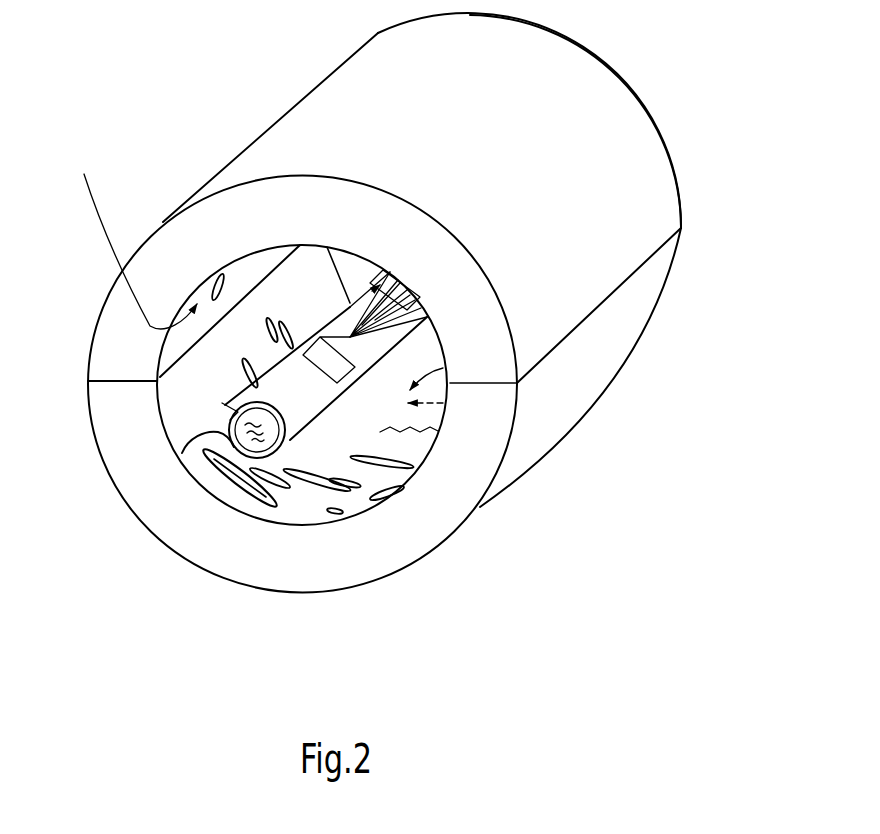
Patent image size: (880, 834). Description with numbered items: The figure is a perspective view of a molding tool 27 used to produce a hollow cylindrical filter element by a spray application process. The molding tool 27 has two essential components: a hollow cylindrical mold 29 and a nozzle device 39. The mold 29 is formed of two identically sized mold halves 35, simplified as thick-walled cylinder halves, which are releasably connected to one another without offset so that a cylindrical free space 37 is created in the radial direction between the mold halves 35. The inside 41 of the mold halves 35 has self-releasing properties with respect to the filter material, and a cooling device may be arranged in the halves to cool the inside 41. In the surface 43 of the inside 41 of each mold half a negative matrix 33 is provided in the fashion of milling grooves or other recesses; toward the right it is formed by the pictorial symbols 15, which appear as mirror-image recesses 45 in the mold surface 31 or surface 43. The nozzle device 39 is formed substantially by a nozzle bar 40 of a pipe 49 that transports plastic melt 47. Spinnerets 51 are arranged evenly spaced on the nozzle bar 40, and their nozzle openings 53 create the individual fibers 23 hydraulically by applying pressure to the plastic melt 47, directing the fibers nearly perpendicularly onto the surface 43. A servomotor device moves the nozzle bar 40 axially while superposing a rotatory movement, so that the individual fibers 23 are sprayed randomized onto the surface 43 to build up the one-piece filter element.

The pictorial symbol 15 is at (380, 367).
The individual fibers 23 is at (357, 277).
The molding tool 27 is at (101, 508).
The mold 29 is at (656, 333).
The mold surface 31 is at (173, 388).
The negative matrix 33 is at (366, 451).
The mold halves 35 is at (606, 92).
The cylindrical free space 37 is at (187, 402).
The nozzle device 39 is at (305, 431).
The nozzle bar 40 is at (312, 322).
The inside 41 is at (136, 239).
The surface 43 is at (170, 352).
The recesses 45 is at (235, 488).
The plastic melt 47 is at (253, 424).
The pipe 49 is at (182, 453).
The spinnerets 51 is at (445, 330).
The nozzle openings 53 is at (377, 283).